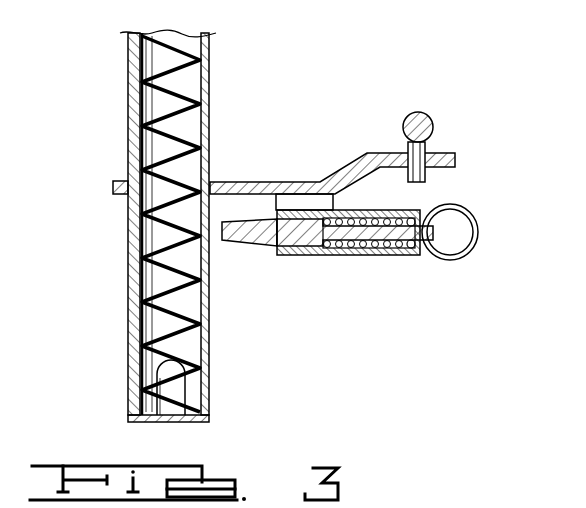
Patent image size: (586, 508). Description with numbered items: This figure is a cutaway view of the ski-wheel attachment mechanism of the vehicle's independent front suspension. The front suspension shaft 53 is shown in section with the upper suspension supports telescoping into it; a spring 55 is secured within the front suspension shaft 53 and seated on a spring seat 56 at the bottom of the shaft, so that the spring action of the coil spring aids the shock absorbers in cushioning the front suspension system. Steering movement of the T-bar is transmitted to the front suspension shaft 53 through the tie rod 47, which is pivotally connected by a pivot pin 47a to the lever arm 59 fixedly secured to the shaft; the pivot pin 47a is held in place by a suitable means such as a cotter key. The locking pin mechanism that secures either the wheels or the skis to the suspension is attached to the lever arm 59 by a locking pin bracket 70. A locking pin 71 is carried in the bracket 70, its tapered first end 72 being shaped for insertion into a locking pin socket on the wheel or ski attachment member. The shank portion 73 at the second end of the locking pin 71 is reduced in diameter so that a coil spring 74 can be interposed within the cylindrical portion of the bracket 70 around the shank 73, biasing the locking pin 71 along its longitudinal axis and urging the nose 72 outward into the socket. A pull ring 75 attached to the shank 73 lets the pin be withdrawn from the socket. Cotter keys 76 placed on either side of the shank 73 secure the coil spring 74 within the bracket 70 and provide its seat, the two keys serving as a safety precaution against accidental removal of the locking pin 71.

The right tie rod 47 is at (434, 128).
The pivot pin 47a is at (414, 182).
The front suspension shaft 53 is at (210, 376).
The spring 55 is at (180, 91).
The spring seat 56 is at (167, 383).
The lever arm 59 is at (300, 182).
The locking pin bracket 70 is at (276, 203).
The locking pin 71 is at (286, 256).
The tapered first end 72 is at (223, 242).
The shank portion 73 is at (366, 237).
The coil spring 74 is at (390, 256).
The pull ring 75 is at (462, 258).
The cotter key 76 is at (424, 212).